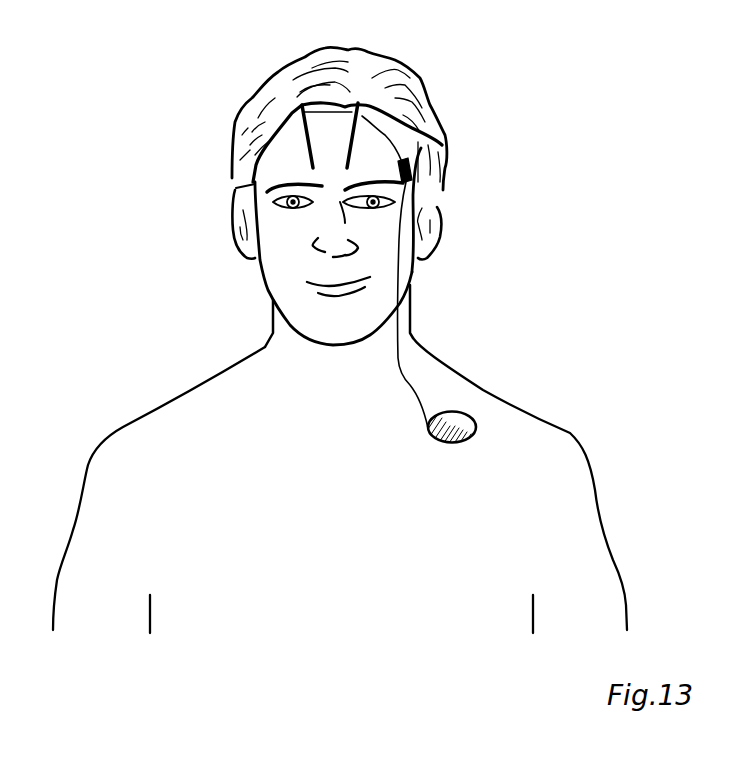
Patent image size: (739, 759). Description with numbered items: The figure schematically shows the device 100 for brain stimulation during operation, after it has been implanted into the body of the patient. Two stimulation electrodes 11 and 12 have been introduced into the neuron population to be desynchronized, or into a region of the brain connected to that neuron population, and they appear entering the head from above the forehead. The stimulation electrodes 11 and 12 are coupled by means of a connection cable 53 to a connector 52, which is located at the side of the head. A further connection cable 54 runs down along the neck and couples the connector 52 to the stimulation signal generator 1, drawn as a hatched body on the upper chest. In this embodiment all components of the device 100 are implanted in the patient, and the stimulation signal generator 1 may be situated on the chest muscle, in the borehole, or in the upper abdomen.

The device 100 is at (116, 139).
The stimulation electrode 11 is at (307, 120).
The stimulation electrode 12 is at (351, 112).
The connection cable 53 is at (392, 142).
The connector 52 is at (410, 175).
The connection cable 54 is at (402, 282).
The stimulation signal generator 1 is at (450, 443).